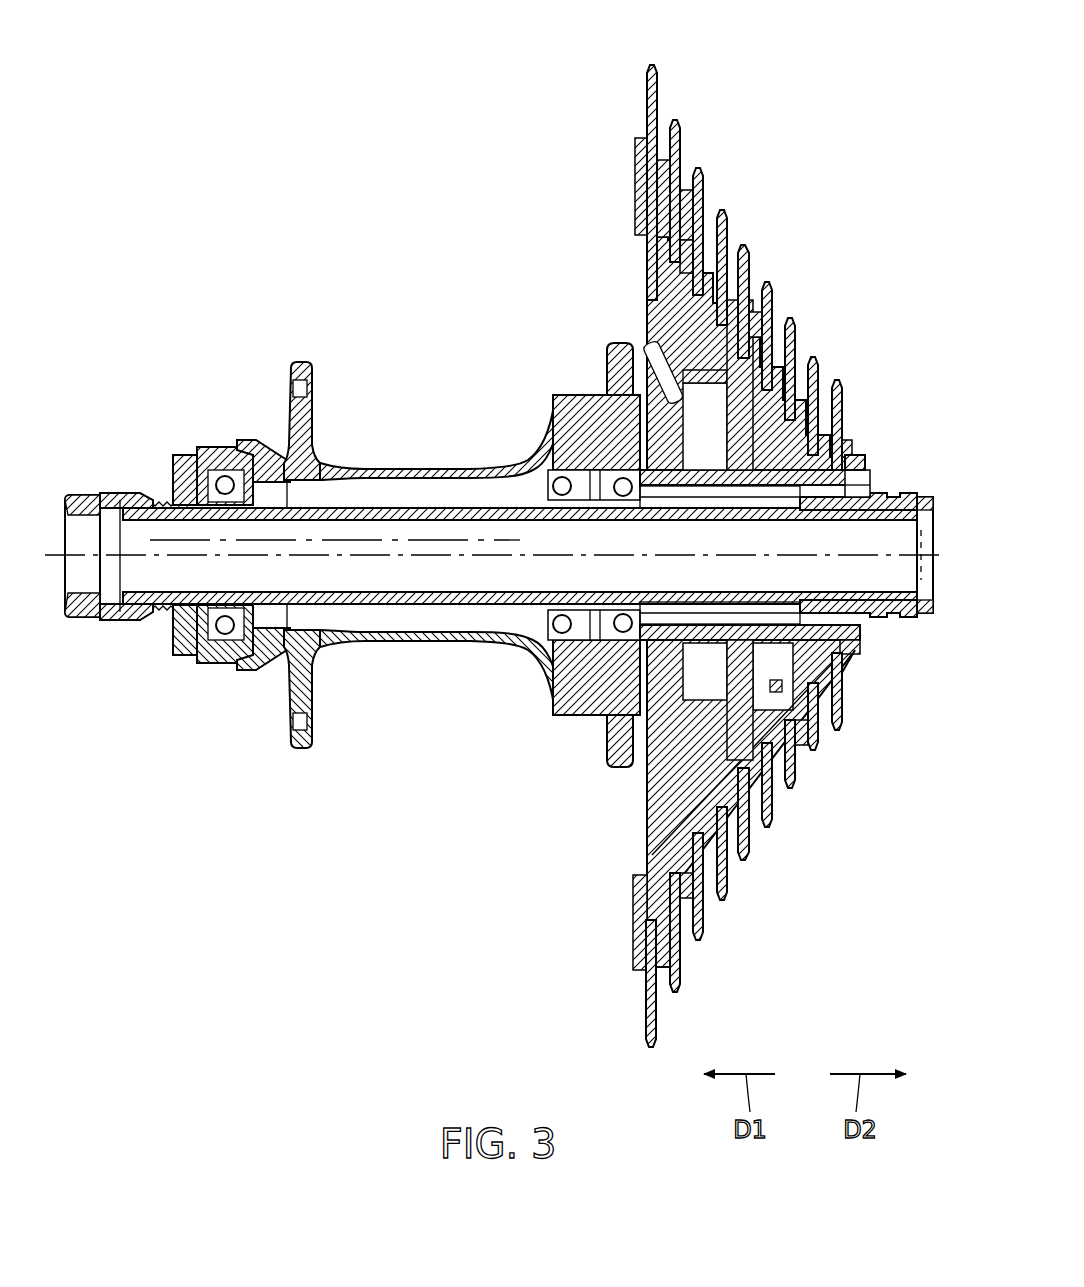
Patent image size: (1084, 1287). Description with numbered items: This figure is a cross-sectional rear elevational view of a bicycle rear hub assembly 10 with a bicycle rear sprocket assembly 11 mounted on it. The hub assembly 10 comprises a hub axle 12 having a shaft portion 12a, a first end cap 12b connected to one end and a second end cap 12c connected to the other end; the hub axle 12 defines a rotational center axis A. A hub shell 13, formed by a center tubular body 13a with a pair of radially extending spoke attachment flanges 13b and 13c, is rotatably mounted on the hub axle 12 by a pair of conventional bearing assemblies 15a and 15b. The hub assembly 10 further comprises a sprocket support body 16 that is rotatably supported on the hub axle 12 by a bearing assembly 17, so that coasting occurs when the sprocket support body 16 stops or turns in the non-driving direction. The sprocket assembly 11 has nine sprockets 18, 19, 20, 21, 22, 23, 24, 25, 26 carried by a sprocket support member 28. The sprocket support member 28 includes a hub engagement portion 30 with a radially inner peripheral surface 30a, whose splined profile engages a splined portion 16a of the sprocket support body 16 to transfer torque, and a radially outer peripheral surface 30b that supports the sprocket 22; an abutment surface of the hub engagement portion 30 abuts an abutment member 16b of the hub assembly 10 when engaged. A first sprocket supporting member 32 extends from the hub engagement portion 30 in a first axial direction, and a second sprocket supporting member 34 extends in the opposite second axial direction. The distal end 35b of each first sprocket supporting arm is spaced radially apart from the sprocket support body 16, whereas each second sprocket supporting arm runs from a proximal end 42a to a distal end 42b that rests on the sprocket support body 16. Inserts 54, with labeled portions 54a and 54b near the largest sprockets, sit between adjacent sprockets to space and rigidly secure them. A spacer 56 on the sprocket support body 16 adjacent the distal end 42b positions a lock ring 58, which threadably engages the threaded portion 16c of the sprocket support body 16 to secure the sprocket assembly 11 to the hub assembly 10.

The bicycle rear hub assembly 10 is at (415, 378).
The bicycle rear sprocket assembly 11 is at (855, 135).
The hub axle 12 is at (368, 505).
The shaft portion 12a is at (365, 606).
The first end cap 12b is at (98, 620).
The second end cap 12c is at (895, 515).
The hub shell 13 is at (400, 648).
The center tubular body 13a is at (447, 640).
The spoke attachment flange 13b is at (298, 752).
The spoke attachment flange 13c is at (617, 767).
The bearing assembly 15a is at (228, 452).
The bearing assembly 15b is at (553, 642).
The sprocket support body 16 is at (697, 470).
The splined portion 16a is at (740, 637).
The abutment member 16b is at (722, 650).
The threaded portion 16c is at (868, 478).
The bearing assembly 17 is at (620, 512).
The sprocket 18 is at (656, 66).
The sprocket 19 is at (679, 120).
The sprocket 20 is at (702, 168).
The sprocket 21 is at (726, 210).
The sprocket 22 is at (748, 245).
The sprocket 23 is at (771, 282).
The sprocket 24 is at (797, 322).
The sprocket 25 is at (820, 358).
The sprocket 26 is at (843, 383).
The sprocket support member 28 is at (645, 832).
The hub engagement portion 30 is at (723, 710).
The radially inner peripheral surface 30a is at (738, 470).
The radially outer peripheral surface 30b is at (752, 775).
The first sprocket supporting member 32 is at (645, 858).
The second sprocket supporting member 34 is at (838, 680).
The distal end 35b is at (640, 140).
The proximal end 42a is at (760, 325).
The distal end 42b is at (858, 466).
The insert 54 is at (667, 172).
The spacer first portion 54a is at (687, 200).
The spacer second portion 54b is at (687, 227).
The spacer 56 is at (848, 656).
The lock ring 58 is at (870, 462).
The rotational center axis A is at (112, 557).